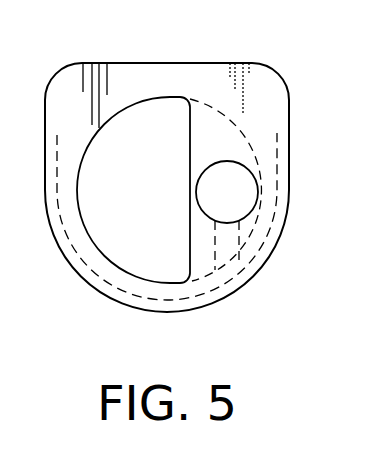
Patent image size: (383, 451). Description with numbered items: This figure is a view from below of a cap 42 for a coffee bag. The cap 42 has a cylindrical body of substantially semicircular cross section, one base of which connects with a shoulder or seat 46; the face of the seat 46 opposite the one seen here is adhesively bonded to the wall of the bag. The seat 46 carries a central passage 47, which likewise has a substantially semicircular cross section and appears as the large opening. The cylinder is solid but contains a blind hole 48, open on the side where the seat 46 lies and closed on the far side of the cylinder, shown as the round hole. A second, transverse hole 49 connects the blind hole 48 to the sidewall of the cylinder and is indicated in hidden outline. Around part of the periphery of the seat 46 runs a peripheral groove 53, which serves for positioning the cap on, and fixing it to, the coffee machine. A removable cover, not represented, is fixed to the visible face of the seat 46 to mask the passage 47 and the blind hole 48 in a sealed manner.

The cap 42 is at (159, 61).
The seat 46 is at (262, 117).
The central passage 47 is at (147, 247).
The blind hole 48 is at (238, 193).
The transverse hole 49 is at (228, 252).
The peripheral groove 53 is at (213, 302).